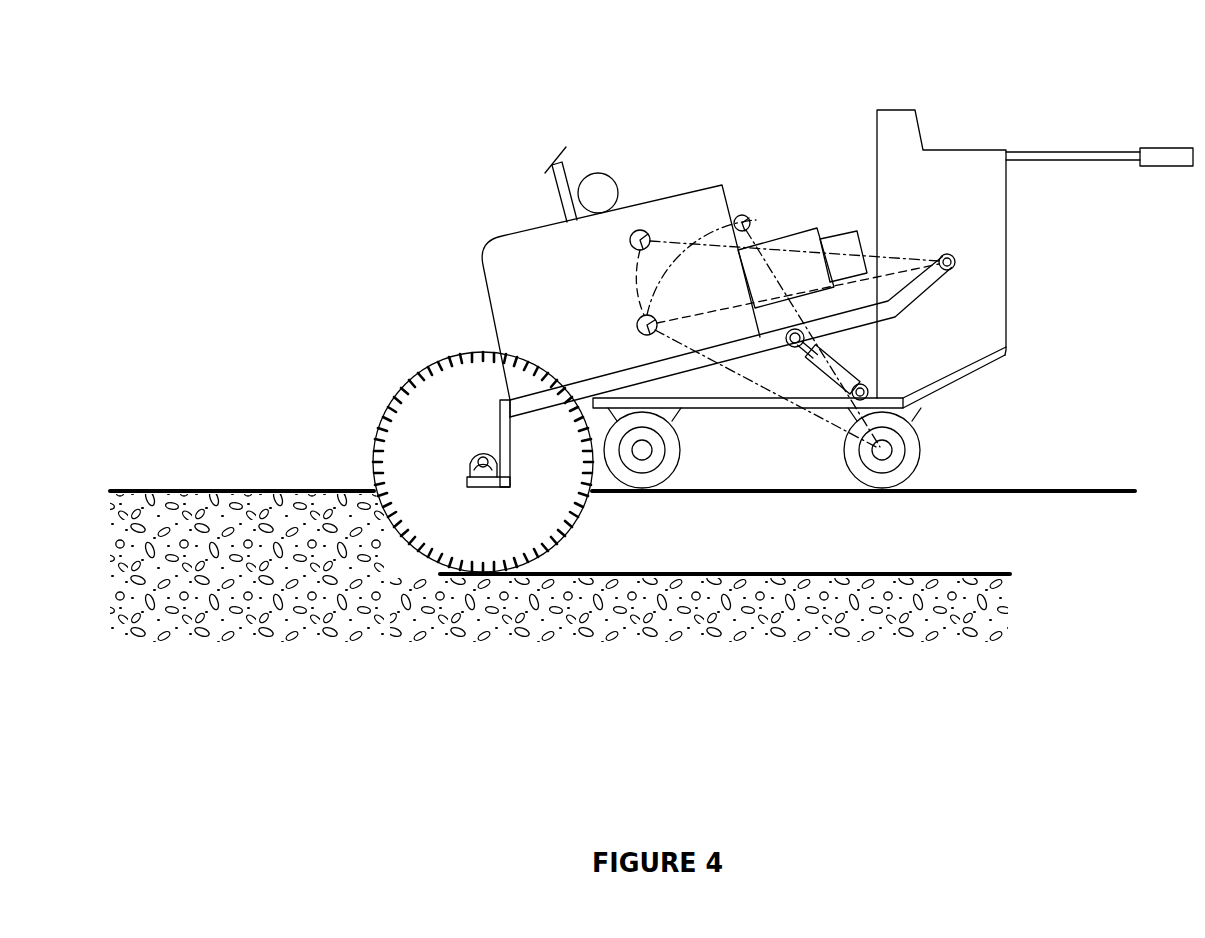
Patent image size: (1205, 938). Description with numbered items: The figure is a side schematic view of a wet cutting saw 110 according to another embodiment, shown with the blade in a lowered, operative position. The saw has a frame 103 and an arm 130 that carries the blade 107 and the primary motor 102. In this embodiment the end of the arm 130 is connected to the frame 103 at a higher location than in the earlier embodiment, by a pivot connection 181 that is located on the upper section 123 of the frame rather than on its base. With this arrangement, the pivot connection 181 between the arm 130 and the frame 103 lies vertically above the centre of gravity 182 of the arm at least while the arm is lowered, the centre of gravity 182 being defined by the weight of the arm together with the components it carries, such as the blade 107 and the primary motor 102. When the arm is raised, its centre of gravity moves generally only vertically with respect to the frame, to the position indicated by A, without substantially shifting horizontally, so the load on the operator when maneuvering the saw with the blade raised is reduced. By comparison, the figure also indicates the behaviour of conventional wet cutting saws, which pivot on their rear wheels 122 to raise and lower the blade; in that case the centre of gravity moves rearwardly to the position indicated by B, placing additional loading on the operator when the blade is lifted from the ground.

The wet cutting saw 110 is at (1035, 203).
The primary motor 102 is at (508, 270).
The frame 103 is at (957, 375).
The blade 107 is at (417, 420).
The rear wheels 122 is at (890, 478).
The upper section of the frame 123 is at (985, 205).
The arm 130 is at (852, 322).
The pivot connection 181 is at (957, 264).
The centre of gravity of the arm 182 is at (636, 328).
The position of the centre of gravity when the arm is raised A is at (643, 229).
The position of the centre of gravity in a conventional saw B is at (747, 216).